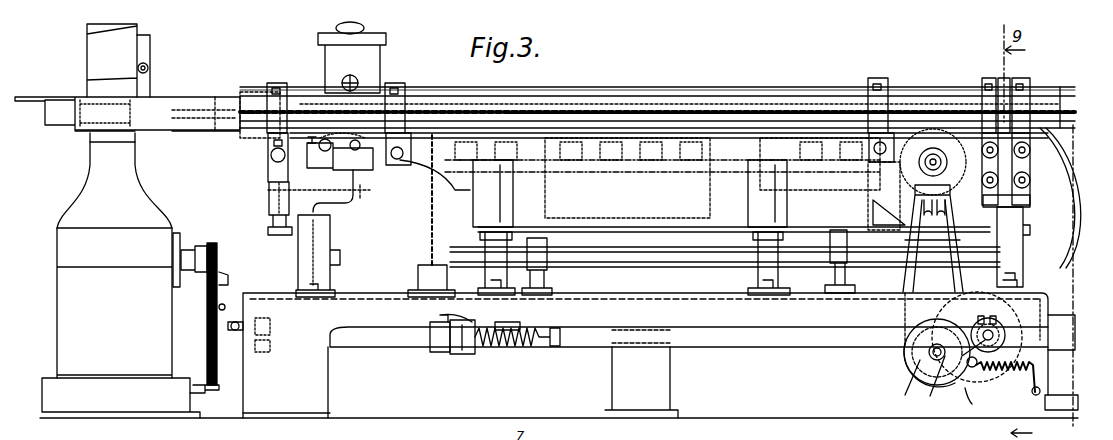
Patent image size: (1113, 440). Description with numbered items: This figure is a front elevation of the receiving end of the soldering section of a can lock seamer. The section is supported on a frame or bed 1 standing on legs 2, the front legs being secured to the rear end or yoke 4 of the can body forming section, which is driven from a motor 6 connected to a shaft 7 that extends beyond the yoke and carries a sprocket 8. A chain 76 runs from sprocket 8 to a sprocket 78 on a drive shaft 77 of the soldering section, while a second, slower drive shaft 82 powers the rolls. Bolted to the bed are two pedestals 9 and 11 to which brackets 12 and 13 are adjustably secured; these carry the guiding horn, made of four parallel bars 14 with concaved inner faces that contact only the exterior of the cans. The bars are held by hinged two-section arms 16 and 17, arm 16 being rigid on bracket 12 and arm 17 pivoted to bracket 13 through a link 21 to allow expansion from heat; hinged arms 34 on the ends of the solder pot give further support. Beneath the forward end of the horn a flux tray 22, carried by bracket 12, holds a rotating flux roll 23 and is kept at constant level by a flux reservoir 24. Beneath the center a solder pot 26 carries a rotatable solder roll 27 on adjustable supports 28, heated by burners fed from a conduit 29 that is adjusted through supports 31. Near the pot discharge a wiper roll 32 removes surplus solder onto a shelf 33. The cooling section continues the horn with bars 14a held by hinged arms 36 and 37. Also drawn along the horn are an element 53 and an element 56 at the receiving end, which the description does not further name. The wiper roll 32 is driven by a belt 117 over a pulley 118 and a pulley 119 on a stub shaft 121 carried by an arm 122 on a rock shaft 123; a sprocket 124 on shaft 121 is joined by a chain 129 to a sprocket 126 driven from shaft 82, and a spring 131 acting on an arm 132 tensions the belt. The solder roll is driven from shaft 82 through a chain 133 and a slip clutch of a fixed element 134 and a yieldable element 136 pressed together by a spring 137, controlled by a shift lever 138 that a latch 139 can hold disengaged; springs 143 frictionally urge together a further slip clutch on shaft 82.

The frame or bed 1 is at (648, 293).
The legs 2 is at (328, 400).
The yoke 4 is at (62, 327).
The motor 6 is at (177, 240).
The shaft 7 is at (217, 255).
The sprocket 8 is at (212, 243).
The pedestal 9 is at (330, 235).
The pedestal 11 is at (1023, 258).
The bracket 12 is at (360, 203).
The bracket 13 is at (1030, 200).
The horn bars 14 is at (742, 90).
The cooling section bars 14a is at (1062, 95).
The arm 16 is at (288, 98).
The arm 17 is at (987, 78).
The link 21 is at (996, 158).
The flux tray 22 is at (345, 168).
The flux roll 23 is at (312, 137).
The flux reservoir 24 is at (380, 70).
The solder pot 26 is at (662, 212).
The solder roll 27 is at (592, 186).
The adjustable supports 28 is at (485, 245).
The conduit 29 is at (700, 262).
The adjustable supports 31 is at (547, 255).
The wiper roll 32 is at (900, 162).
The shelf 33 is at (885, 200).
The hinged arms 34 is at (404, 92).
The hinged arms 36 is at (1028, 82).
The hinged arms 37 is at (1005, 170).
The rack 53 is at (505, 104).
The sleeve 56 is at (200, 108).
The chain 76 is at (219, 285).
The drive shaft 77 is at (264, 330).
The sprocket 78 is at (205, 373).
The drive shaft 82 is at (402, 347).
The belt 117 is at (905, 305).
The pulley 118 is at (950, 180).
The pulley 119 is at (915, 365).
The stub shaft 121 is at (929, 352).
The arm 122 is at (922, 383).
The rock shaft 123 is at (998, 327).
The sprocket 124 is at (905, 395).
The sprocket 126 is at (1008, 344).
The chain 129 is at (972, 367).
The spring 131 is at (1010, 380).
The arm 132 is at (968, 400).
The chain 133 is at (431, 218).
The fixed clutch element 134 is at (447, 352).
The yieldable clutch element 136 is at (468, 354).
The spring 137 is at (540, 330).
The shift lever 138 is at (505, 322).
The latch 139 is at (470, 306).
The springs 143 is at (148, 70).